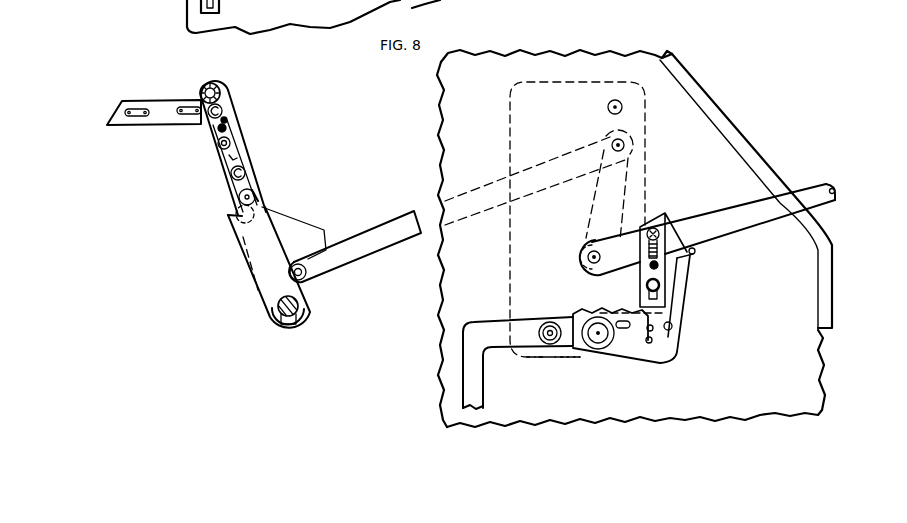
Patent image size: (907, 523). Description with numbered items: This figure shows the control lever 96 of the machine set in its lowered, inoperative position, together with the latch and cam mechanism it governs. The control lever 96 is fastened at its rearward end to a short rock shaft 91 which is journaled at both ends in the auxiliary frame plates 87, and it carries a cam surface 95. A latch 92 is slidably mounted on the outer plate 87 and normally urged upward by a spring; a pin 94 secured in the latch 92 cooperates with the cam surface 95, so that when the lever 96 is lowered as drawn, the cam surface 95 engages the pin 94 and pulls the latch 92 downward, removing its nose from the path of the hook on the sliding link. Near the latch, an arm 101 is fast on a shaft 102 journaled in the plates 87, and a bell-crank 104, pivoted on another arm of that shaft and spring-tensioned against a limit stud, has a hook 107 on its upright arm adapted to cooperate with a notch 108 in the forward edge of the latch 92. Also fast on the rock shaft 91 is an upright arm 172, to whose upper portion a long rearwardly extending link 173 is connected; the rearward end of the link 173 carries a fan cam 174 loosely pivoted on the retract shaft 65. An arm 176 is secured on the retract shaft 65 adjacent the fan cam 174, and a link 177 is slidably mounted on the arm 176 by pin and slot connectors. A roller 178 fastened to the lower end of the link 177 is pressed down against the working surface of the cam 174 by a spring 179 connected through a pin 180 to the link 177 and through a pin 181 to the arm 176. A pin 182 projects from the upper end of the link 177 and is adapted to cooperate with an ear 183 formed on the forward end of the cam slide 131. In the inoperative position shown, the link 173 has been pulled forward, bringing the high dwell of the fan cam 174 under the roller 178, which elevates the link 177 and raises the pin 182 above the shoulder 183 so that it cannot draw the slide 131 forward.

The retract shaft 65 is at (297, 317).
The auxiliary frame plate 87 is at (557, 97).
The rock shaft 91 is at (588, 260).
The latch 92 is at (650, 292).
The pin 94 is at (651, 268).
The cam surface 95 is at (648, 260).
The control lever 96 is at (835, 197).
The arm 101 is at (556, 320).
The shaft 102 is at (600, 343).
The bell-crank 104 is at (688, 294).
The hook 107 is at (696, 257).
The notch 108 is at (666, 255).
The cam slide 131 is at (162, 108).
The upright arm 172 is at (594, 196).
The link 173 is at (400, 222).
The fan cam 174 is at (312, 238).
The arm 176 is at (264, 207).
The link 177 is at (254, 188).
The roller 178 is at (259, 201).
The spring 179 is at (227, 128).
The pin 180 is at (223, 109).
The pin 181 is at (243, 172).
The pin 182 is at (221, 91).
The ear 183 is at (229, 119).